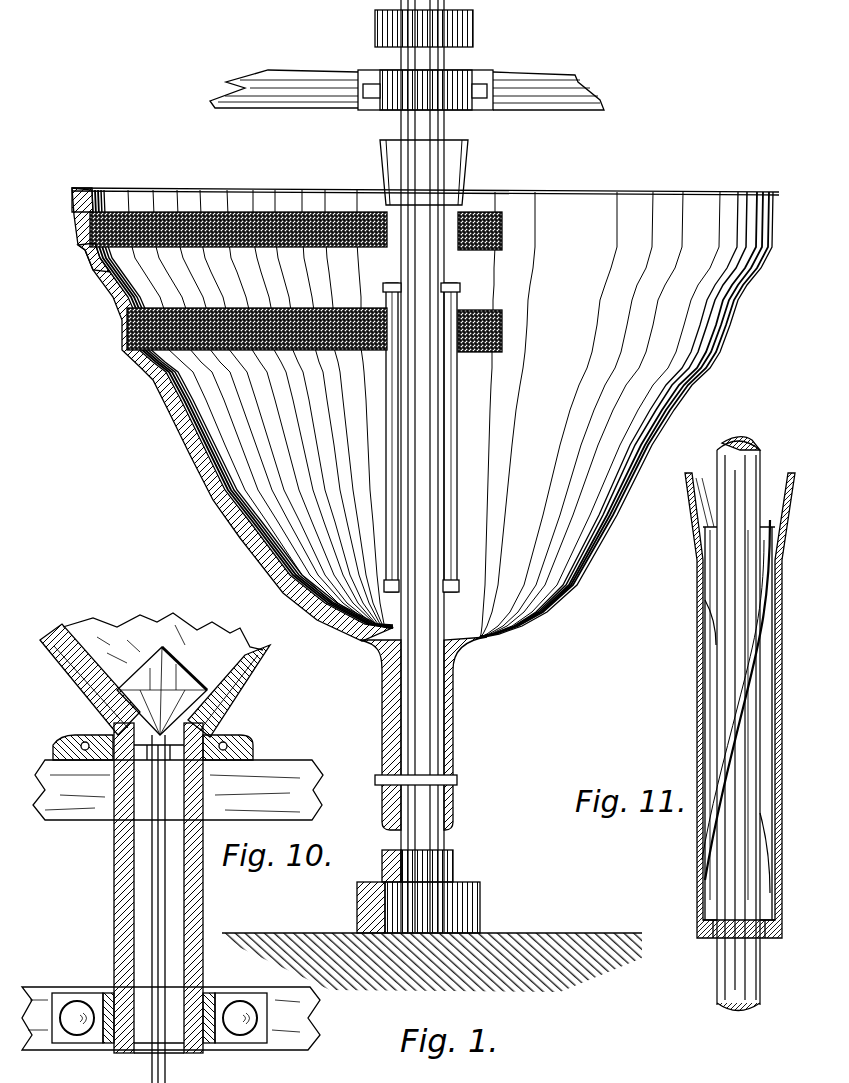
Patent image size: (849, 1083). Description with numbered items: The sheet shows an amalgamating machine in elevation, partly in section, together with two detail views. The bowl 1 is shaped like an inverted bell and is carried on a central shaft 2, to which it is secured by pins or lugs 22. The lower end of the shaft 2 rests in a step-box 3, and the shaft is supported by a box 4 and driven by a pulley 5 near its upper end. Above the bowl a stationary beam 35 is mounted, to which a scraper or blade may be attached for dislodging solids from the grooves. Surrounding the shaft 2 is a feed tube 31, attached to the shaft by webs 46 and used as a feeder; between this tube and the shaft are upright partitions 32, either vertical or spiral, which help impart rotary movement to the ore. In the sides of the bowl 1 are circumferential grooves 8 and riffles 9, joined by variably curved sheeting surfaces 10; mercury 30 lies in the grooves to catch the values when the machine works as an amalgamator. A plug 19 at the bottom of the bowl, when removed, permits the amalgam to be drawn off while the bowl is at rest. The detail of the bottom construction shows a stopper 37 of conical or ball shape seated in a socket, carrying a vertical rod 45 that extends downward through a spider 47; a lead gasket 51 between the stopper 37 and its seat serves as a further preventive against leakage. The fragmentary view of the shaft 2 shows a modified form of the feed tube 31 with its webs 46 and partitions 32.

In FIG. 1, the bowl 1 is at (182, 485).
In FIG. 10, the bowl 1 is at (245, 700).
In FIG. 1, the shaft 2 is at (396, 128).
In FIG. 11, the shaft 2 is at (762, 468).
In FIG. 1, the step-box 3 is at (487, 896).
In FIG. 1, the box 4 is at (490, 72).
In FIG. 1, the pulley 5 is at (480, 33).
In FIG. 1, the grooves 8 is at (90, 228).
In FIG. 1, the riffles 9 is at (76, 200).
In FIG. 1, the variably curved sheeting surfaces 10 is at (120, 288).
In FIG. 10, the variably curved sheeting surfaces 10 is at (87, 643).
In FIG. 1, the plug 19 is at (355, 649).
In FIG. 1, the pins or lugs 22 is at (463, 783).
In FIG. 1, the mercury 30 is at (85, 238).
In FIG. 1, the tube 31 is at (381, 165).
In FIG. 11, the tube 31 is at (690, 512).
In FIG. 1, the upright partitions 32 is at (458, 297).
In FIG. 11, the upright partitions 32 is at (742, 700).
In FIG. 1, the stationary beam 35 is at (576, 70).
In FIG. 10, the stopper 37 is at (178, 668).
In FIG. 10, the vertical rod 45 is at (152, 885).
In FIG. 1, the webs 46 is at (386, 284).
In FIG. 11, the webs 46 is at (697, 705).
In FIG. 10, the spider 47 is at (82, 808).
In FIG. 10, the lead gasket 51 is at (100, 705).